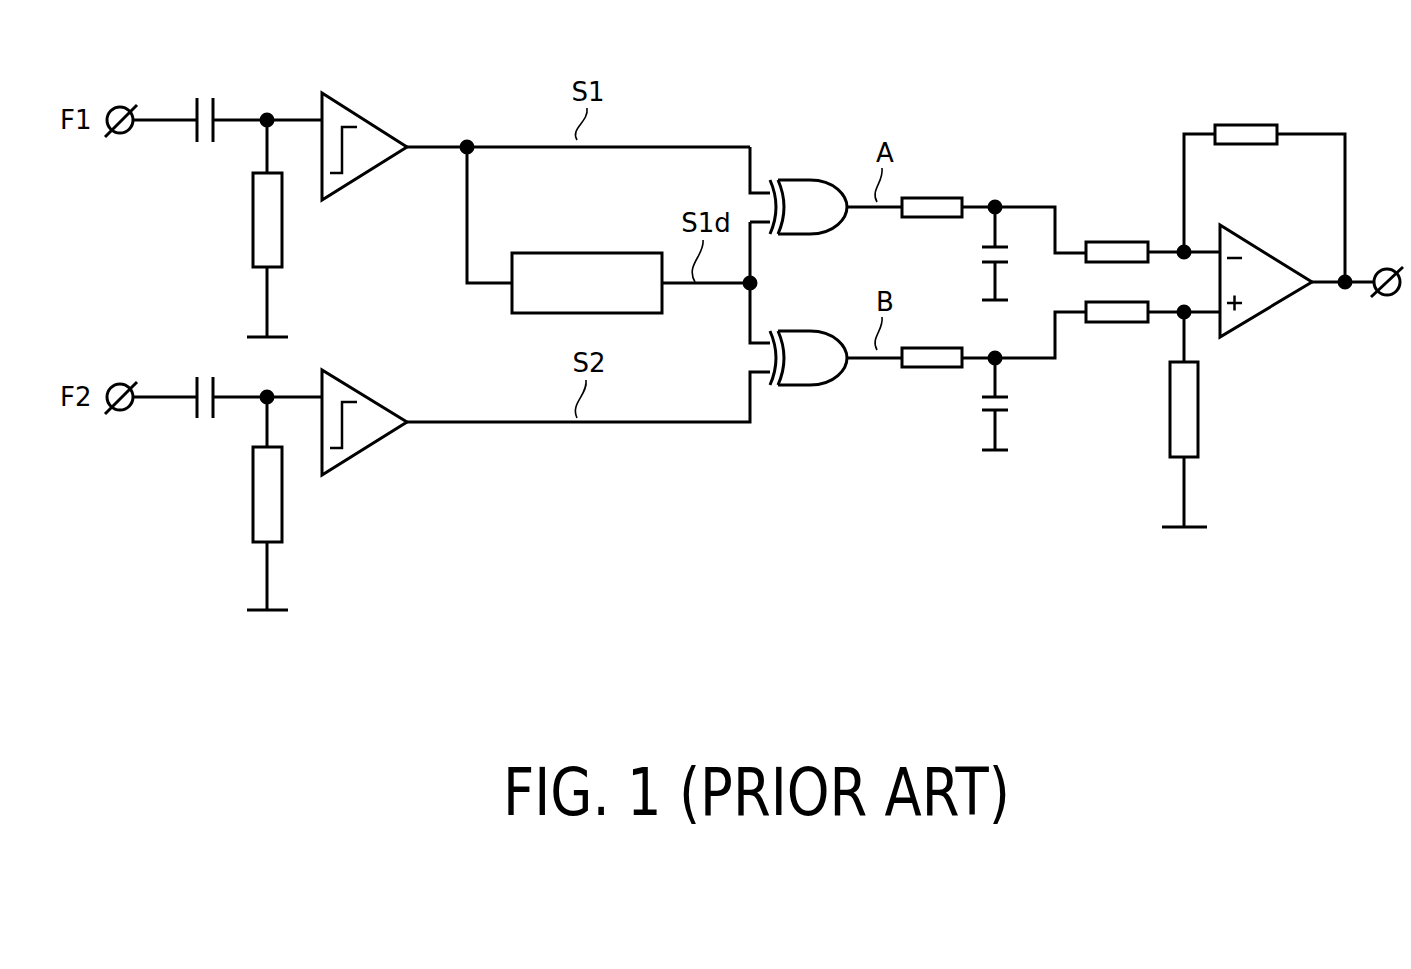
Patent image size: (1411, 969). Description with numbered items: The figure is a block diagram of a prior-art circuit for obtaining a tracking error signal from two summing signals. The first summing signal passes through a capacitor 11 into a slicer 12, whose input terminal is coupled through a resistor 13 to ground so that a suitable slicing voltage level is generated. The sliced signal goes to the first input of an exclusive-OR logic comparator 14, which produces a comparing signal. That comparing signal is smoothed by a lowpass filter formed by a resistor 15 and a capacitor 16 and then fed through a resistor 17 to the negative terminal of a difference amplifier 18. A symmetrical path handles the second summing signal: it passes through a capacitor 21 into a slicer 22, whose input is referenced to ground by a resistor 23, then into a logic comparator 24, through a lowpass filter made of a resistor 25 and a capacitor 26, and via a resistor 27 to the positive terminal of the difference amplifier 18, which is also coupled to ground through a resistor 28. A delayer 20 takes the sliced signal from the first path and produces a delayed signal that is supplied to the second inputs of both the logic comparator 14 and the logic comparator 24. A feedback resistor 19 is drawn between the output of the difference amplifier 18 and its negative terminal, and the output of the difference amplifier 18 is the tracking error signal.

The capacitor 11 is at (207, 97).
The slicer 12 is at (380, 135).
The resistor 13 is at (270, 248).
The logic comparator 14 is at (797, 193).
The resistor 15 is at (937, 197).
The capacitor 16 is at (978, 253).
The resistor 17 is at (1115, 242).
The difference amplifier 18 is at (1260, 270).
The feedback resistor 19 is at (1245, 123).
The delayer 20 is at (532, 305).
The capacitor 21 is at (207, 370).
The slicer 22 is at (380, 408).
The resistor 23 is at (270, 522).
The logic comparator 24 is at (793, 345).
The resistor 25 is at (933, 367).
The capacitor 26 is at (1010, 403).
The resistor 27 is at (1127, 323).
The resistor 28 is at (1192, 430).